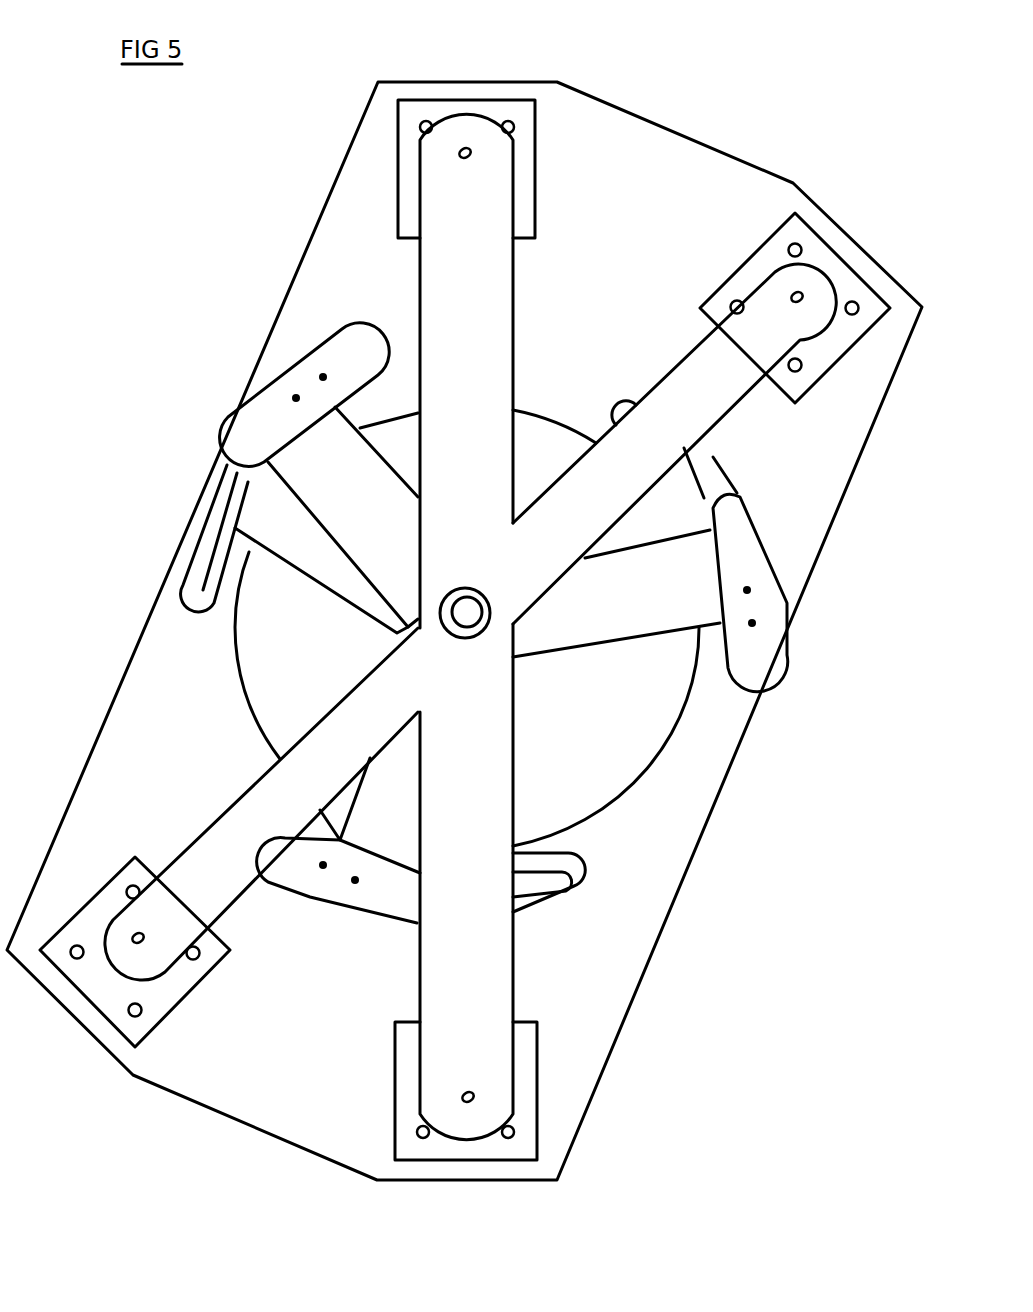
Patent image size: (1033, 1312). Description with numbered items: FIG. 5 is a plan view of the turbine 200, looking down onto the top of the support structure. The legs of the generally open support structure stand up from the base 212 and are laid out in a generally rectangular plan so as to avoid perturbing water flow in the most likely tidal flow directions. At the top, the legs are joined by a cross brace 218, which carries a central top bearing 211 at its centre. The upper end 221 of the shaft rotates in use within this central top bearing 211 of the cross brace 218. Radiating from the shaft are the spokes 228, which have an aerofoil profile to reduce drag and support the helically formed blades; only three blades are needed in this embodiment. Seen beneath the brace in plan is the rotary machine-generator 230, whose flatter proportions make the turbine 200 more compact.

The turbine 200 is at (187, 359).
The central top bearing 211 is at (450, 600).
The base 212 is at (606, 986).
The cross brace 218 is at (488, 391).
The upper end 221 is at (480, 604).
The spokes 228 is at (372, 523).
The rotary machine-generator 230 is at (608, 776).